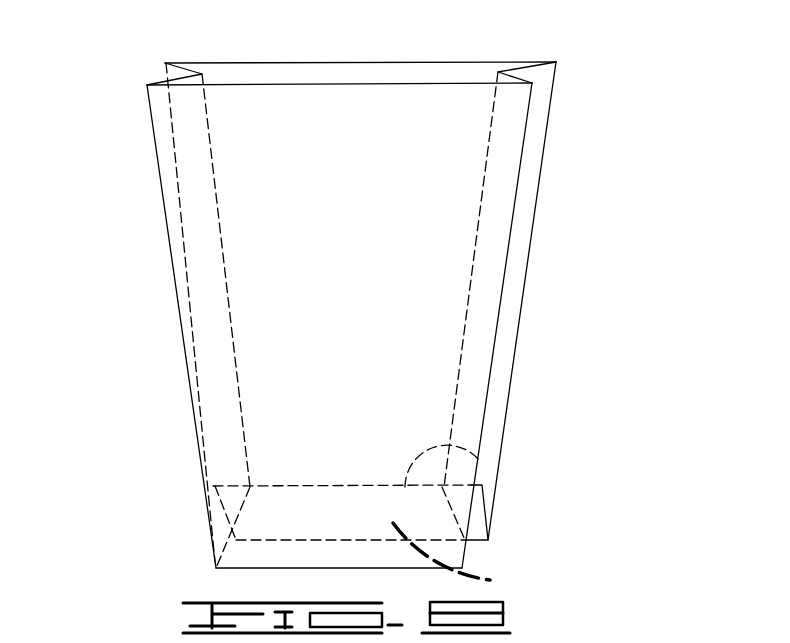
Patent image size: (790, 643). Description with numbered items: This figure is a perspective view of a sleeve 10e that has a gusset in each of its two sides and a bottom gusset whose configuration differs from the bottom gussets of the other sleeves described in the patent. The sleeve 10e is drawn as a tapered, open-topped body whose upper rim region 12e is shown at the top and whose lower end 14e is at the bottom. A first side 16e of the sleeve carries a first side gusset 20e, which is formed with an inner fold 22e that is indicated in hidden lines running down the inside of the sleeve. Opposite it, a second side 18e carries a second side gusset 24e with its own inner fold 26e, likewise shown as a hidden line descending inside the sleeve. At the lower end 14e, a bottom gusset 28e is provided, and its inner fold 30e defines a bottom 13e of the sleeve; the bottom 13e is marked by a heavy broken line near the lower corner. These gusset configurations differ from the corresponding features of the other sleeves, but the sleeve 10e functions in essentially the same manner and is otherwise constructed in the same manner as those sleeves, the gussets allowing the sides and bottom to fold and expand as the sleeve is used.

The sleeve 10e is at (562, 320).
The top rim 12e is at (260, 63).
The bottom 13e is at (470, 555).
The lower end 14e is at (247, 568).
The first side 16e is at (167, 298).
The second side 18e is at (543, 243).
The first side gusset 20e is at (165, 64).
The inner fold 22e is at (213, 173).
The second side gusset 24e is at (542, 108).
The inner fold 26e is at (480, 188).
The bottom gusset 28e is at (492, 514).
The inner fold 30e is at (465, 445).